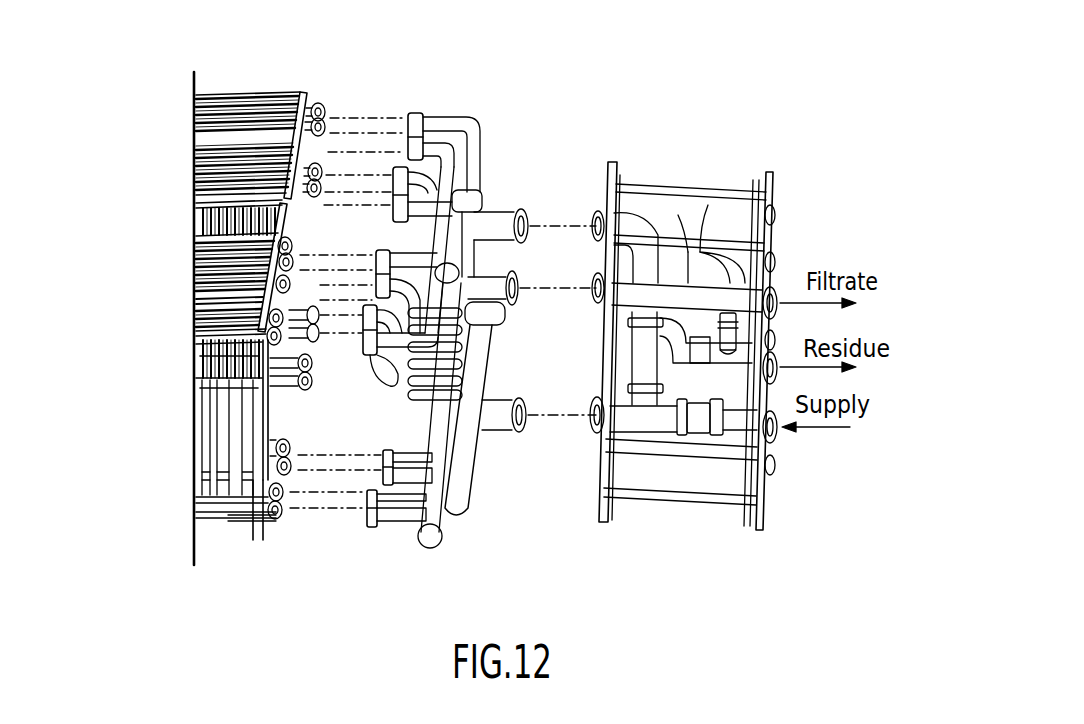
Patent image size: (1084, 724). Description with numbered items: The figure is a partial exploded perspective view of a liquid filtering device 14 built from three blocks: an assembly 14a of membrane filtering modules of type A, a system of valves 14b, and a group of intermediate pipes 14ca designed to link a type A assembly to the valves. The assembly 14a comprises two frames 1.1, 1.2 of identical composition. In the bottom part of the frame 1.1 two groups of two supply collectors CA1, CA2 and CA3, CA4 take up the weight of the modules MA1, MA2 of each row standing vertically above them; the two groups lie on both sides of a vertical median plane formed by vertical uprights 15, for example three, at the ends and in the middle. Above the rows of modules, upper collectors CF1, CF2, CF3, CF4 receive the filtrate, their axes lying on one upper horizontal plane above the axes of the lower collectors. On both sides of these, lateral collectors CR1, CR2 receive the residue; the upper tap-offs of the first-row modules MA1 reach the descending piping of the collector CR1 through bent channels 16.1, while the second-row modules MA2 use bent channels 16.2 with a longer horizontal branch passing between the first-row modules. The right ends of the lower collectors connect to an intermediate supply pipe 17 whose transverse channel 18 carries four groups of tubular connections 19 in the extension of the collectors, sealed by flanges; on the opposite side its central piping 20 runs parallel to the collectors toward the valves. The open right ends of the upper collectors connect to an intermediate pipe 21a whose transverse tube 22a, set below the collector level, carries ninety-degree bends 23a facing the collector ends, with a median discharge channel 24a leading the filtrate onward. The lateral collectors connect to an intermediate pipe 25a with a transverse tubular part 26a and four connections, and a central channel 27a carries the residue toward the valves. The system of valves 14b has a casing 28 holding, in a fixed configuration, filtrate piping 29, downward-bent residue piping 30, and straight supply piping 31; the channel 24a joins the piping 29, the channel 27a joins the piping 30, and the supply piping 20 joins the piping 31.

The liquid filtering device 14 is at (611, 82).
The assembly of membrane filtering modules 14a is at (172, 51).
The system of valves 14b is at (600, 132).
The group of intermediate pipes for type A modules 14ca is at (397, 78).
The frame 1.1 is at (222, 240).
The frame 1.2 is at (219, 102).
The vertical uprights 15 is at (288, 405).
The bent channels 16.1 is at (234, 363).
The bent channels 16.2 is at (232, 392).
The intermediate supply pipe 17 is at (478, 471).
The transverse channel 18 is at (443, 507).
The tubular connections 19 is at (399, 518).
The central piping 20 is at (498, 408).
The intermediate pipe 21a is at (402, 246).
The transverse tube 22a is at (388, 392).
The bends 23a is at (432, 130).
The median discharge channel 24a is at (488, 284).
The intermediate pipe 25a is at (487, 148).
The transverse tubular part 26a is at (470, 317).
The central channel 27a is at (494, 216).
The casing 28 is at (764, 502).
The piping for the filtrate 29 is at (691, 292).
The piping for the residue 30 is at (651, 258).
The piping for the supply 31 is at (661, 415).
The lateral collector CR1 is at (211, 335).
The lateral collector CR2 is at (290, 246).
The upper collector CF1 is at (238, 307).
The upper collector CF2 is at (250, 293).
The upper collector CF3 is at (290, 286).
The upper collector CF4 is at (294, 262).
The supply collector CA1 is at (238, 506).
The supply collector CA2 is at (301, 494).
The supply collector CA3 is at (290, 468).
The supply collector CA4 is at (273, 440).
The modules of type A, first row MA1 is at (247, 450).
The modules of type A, second row MA2 is at (234, 430).